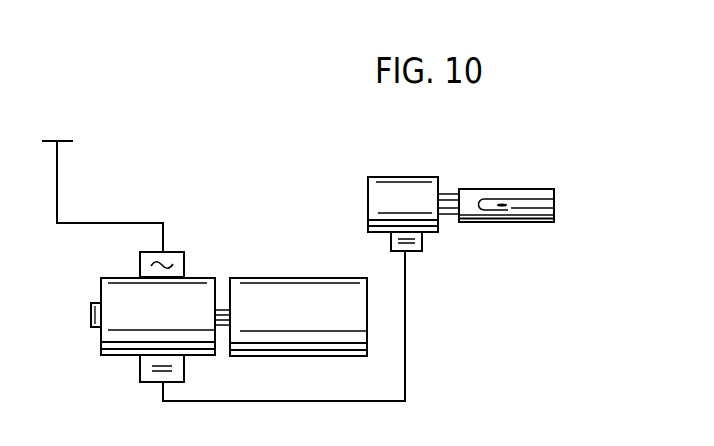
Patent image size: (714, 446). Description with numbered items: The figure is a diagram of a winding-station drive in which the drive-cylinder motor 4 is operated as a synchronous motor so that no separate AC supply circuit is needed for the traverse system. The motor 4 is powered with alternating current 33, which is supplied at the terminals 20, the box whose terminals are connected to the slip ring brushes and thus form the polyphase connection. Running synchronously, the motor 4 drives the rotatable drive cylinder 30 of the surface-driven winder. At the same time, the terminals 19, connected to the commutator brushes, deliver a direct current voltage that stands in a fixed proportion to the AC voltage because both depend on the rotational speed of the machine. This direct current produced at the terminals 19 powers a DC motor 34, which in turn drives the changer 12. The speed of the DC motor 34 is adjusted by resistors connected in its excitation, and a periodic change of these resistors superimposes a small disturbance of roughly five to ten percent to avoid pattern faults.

The motor 4 is at (100, 339).
The changer 12 is at (505, 187).
The terminal box 19 is at (184, 373).
The terminal box 20 is at (184, 266).
The drive cylinder 30 is at (312, 277).
The alternating current 33 is at (57, 187).
The DC motor 34 is at (410, 175).